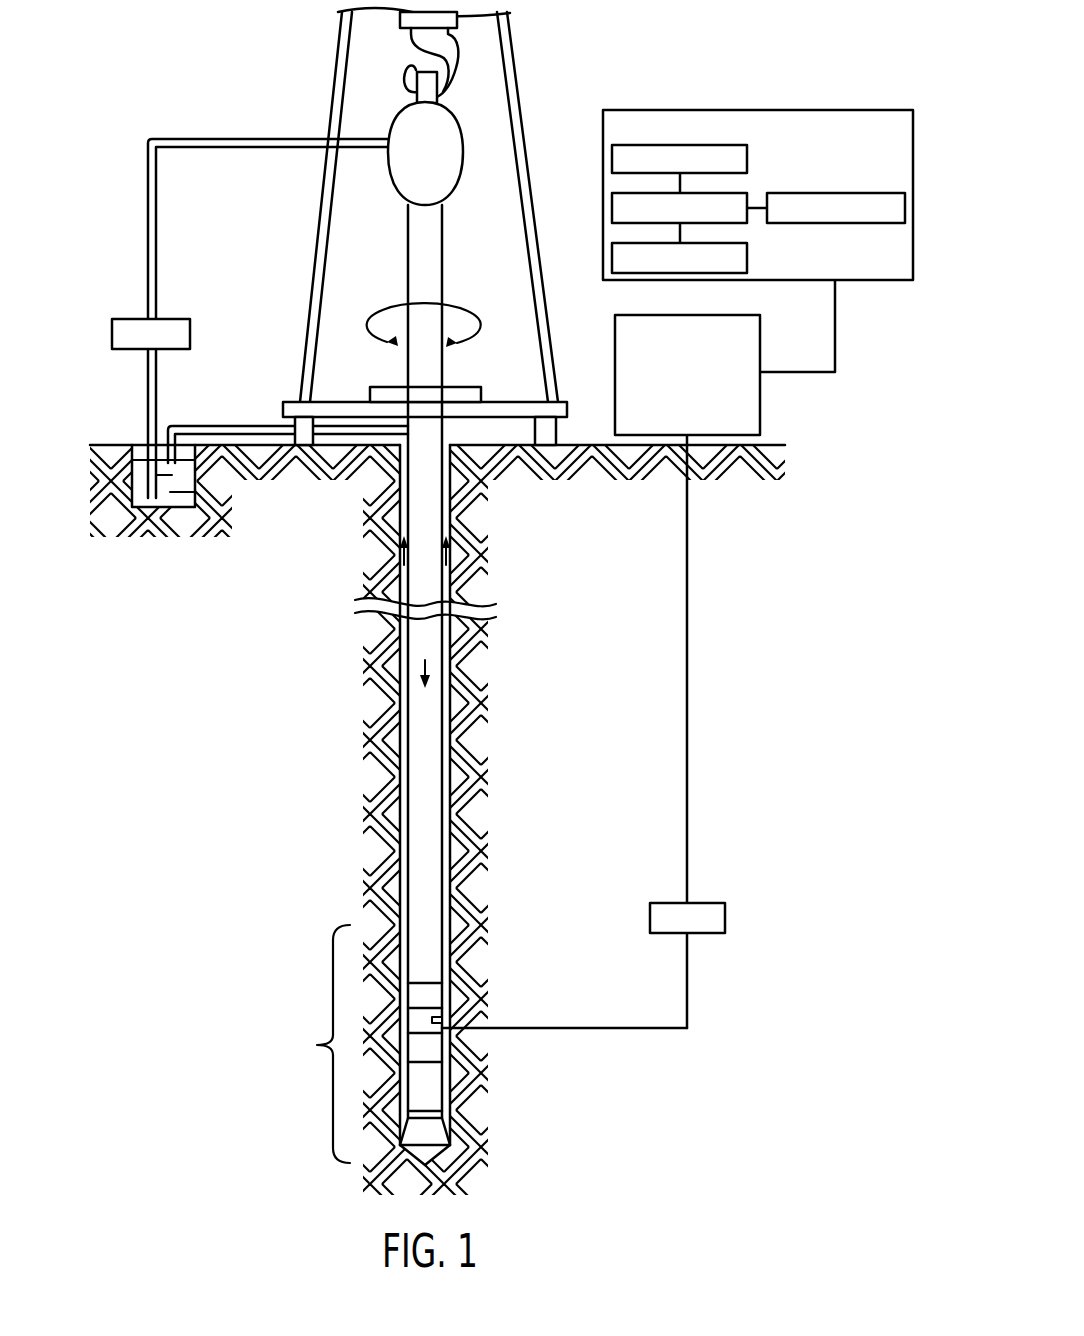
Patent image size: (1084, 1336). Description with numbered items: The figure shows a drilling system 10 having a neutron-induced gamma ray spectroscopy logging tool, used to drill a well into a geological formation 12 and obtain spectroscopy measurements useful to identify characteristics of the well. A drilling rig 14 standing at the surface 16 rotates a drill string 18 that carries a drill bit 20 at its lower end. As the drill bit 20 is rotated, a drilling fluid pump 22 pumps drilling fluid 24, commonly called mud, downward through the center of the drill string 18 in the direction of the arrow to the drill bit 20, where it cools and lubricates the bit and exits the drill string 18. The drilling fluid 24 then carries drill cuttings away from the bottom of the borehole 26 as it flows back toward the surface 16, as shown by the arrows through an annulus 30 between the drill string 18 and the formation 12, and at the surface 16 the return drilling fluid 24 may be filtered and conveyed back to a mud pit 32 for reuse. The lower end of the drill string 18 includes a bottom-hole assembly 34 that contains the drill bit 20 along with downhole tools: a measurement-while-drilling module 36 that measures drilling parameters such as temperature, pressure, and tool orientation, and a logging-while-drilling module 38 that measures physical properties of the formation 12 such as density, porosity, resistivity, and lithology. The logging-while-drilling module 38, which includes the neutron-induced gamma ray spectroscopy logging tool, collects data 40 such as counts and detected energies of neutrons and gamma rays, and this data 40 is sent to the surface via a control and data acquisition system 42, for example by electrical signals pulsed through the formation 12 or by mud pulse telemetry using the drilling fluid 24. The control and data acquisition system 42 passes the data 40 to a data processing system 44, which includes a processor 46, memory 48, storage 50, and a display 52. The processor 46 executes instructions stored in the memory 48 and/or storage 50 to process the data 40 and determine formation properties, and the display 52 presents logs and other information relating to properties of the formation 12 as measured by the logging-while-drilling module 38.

The drilling system 10 is at (682, 26).
The geological formation 12 is at (647, 874).
The drilling rig 14 is at (545, 64).
The surface 16 is at (580, 442).
The drill string 18 is at (426, 438).
The drill bit 20 is at (437, 1135).
The drilling fluid pump 22 is at (112, 334).
The drilling fluid 24 is at (400, 544).
The borehole 26 is at (446, 680).
The annulus 30 is at (447, 438).
The mud pit 32 is at (180, 498).
The bottom-hole assembly 34 is at (317, 1045).
The measurement-while-drilling module 36 is at (432, 990).
The logging-while-drilling module 38 is at (432, 1048).
The data 40 is at (725, 918).
The control and data acquisition system 42 is at (687, 314).
The data processing system 44 is at (758, 171).
The processor 46 is at (747, 214).
The memory 48 is at (747, 158).
The storage 50 is at (747, 258).
The display 52 is at (836, 192).